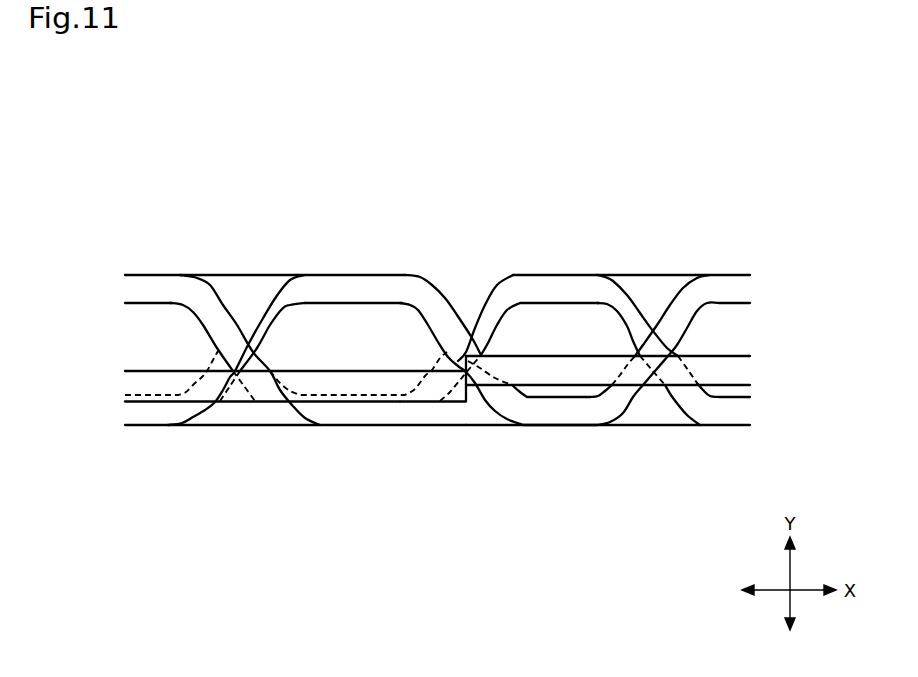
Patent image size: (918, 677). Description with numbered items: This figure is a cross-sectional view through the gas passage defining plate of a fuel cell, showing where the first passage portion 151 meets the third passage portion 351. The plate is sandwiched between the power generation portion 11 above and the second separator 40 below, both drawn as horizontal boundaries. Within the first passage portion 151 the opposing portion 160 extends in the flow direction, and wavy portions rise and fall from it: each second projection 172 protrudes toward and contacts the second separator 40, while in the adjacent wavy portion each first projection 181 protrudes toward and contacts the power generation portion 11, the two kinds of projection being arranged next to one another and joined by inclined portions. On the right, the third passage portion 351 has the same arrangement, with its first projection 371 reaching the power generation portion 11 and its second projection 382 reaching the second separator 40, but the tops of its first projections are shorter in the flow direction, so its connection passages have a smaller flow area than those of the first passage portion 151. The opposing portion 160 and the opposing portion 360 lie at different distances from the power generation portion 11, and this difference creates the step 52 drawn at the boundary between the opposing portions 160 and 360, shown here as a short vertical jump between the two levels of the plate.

The power generation portion 11 is at (658, 275).
The second separator 40 is at (643, 425).
The step 52 is at (455, 368).
The first passage portion 151 is at (369, 217).
The opposing portion 160 is at (234, 403).
The second projection 172 is at (345, 428).
The first projection 181 is at (337, 277).
The third passage portion 351 is at (635, 217).
The opposing portion 360 is at (584, 388).
The first projection 371 is at (545, 277).
The second projection 382 is at (537, 428).